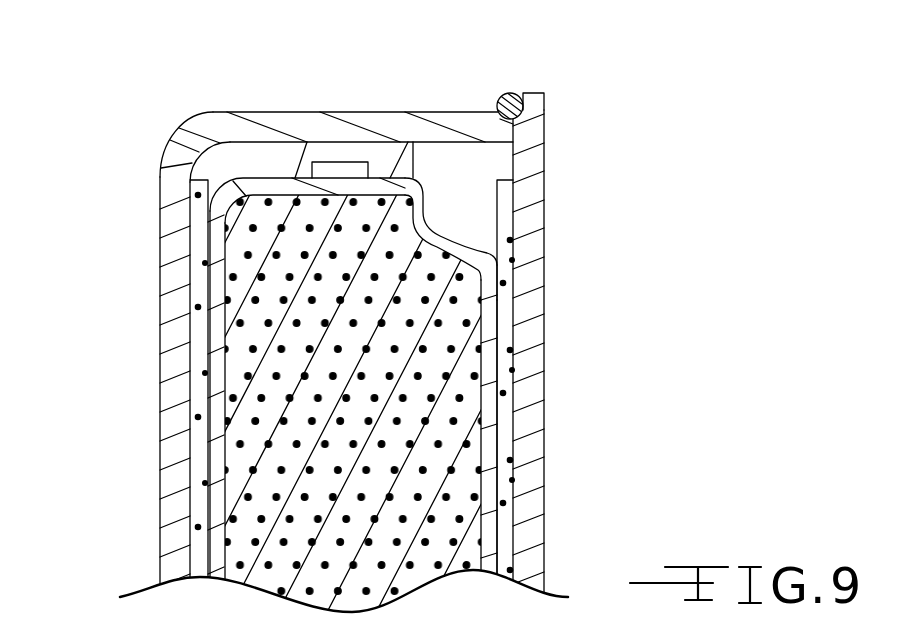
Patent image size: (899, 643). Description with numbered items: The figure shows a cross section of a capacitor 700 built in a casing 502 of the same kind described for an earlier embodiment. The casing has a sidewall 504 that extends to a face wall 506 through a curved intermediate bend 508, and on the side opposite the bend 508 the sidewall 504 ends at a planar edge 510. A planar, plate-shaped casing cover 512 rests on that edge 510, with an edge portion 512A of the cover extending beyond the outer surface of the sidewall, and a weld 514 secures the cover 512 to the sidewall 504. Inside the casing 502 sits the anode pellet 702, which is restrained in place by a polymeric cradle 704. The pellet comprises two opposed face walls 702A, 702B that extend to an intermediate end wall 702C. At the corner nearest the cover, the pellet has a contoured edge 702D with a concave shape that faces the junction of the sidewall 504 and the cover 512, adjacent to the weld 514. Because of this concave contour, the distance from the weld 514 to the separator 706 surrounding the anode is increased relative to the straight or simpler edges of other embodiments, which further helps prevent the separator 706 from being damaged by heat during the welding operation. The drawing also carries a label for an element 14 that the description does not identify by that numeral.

The capacitor 700 is at (690, 119).
The casing 502 is at (145, 242).
The face wall 506 is at (170, 365).
The curved intermediate bend 508 is at (172, 143).
The sidewall 504 is at (345, 112).
The planar edge 510 is at (546, 127).
The casing cover 512 is at (535, 253).
The edge portion 512A is at (549, 100).
The weld 514 is at (497, 96).
The separator 14 is at (197, 442).
The anode pellet 702 is at (457, 492).
The face wall 702A is at (490, 452).
The face wall 702B is at (222, 500).
The intermediate end wall 702C is at (287, 177).
The contoured edge 702D is at (413, 221).
The polymeric cradle 704 is at (297, 152).
The separator 706 is at (493, 278).